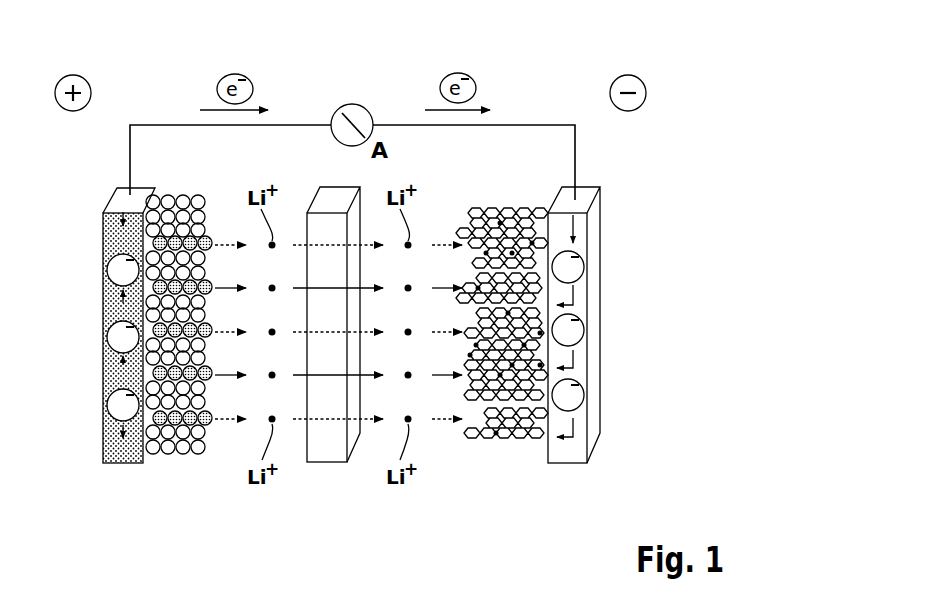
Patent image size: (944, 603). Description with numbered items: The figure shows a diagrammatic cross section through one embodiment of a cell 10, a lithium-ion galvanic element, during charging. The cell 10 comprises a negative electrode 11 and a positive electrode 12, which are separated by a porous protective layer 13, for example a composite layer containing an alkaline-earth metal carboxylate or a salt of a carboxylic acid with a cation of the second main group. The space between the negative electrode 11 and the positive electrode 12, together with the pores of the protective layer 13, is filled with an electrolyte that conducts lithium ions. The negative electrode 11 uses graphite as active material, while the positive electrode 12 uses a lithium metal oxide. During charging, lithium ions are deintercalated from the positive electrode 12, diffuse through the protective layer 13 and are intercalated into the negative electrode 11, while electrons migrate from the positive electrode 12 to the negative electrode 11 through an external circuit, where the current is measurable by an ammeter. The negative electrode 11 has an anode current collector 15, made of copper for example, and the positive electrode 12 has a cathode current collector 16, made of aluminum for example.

The cell 10 is at (519, 66).
The negative electrode 11 is at (500, 440).
The positive electrode 12 is at (165, 456).
The porous protective layer 13 is at (329, 463).
The anode current collector 15 is at (589, 327).
The positive current collector 16 is at (103, 353).